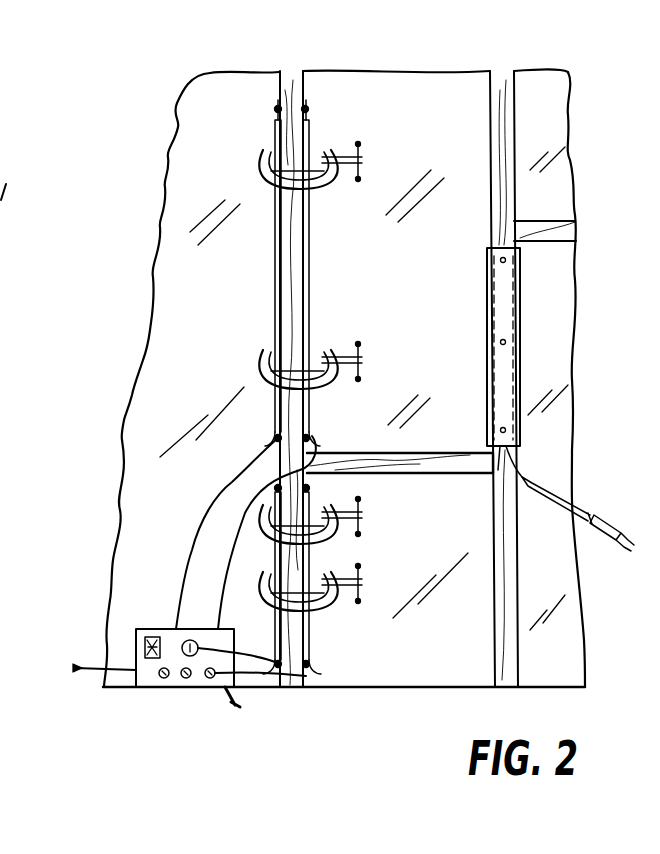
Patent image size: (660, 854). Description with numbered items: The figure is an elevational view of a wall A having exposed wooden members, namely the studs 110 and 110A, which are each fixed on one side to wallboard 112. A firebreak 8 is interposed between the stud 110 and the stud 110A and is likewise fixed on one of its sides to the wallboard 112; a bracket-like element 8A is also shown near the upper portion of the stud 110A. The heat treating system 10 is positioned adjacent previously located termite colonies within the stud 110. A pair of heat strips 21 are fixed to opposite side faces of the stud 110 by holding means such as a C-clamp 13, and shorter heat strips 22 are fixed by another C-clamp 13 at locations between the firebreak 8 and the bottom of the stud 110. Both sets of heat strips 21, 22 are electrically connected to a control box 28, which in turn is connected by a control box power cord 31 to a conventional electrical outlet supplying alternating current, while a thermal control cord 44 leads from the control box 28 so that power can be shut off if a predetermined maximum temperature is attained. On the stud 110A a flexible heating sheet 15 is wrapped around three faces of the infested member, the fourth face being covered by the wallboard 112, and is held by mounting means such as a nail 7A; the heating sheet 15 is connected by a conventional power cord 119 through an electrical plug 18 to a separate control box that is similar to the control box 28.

The heat treating system 10 is at (208, 699).
The C-clamp 13 is at (362, 157).
The flexible heating sheet 15 is at (475, 362).
The electrical plug 18 is at (610, 550).
The heat strips 21 is at (276, 270).
The heat strips 22 is at (276, 555).
The control box 28 is at (150, 630).
The control box power cord 31 is at (80, 678).
The thermal control cord 44 is at (230, 710).
The nail 7A is at (503, 342).
The firebreak 8 is at (415, 452).
The shelf bracket 8A is at (547, 221).
The stud 110 is at (303, 88).
The stud 110A is at (490, 122).
The wallboard 112 is at (222, 162).
The power cord 119 is at (586, 508).
The wall A is at (575, 96).